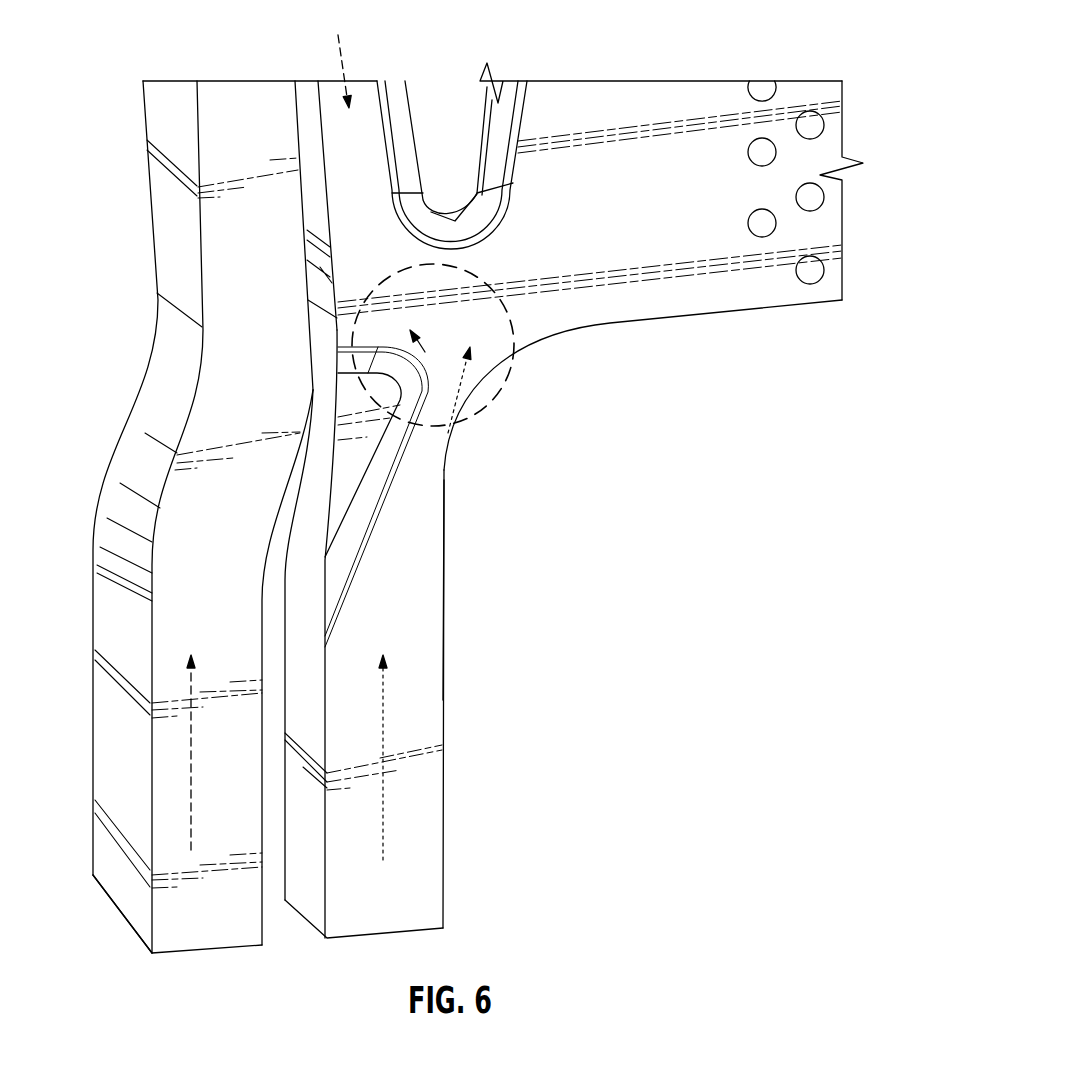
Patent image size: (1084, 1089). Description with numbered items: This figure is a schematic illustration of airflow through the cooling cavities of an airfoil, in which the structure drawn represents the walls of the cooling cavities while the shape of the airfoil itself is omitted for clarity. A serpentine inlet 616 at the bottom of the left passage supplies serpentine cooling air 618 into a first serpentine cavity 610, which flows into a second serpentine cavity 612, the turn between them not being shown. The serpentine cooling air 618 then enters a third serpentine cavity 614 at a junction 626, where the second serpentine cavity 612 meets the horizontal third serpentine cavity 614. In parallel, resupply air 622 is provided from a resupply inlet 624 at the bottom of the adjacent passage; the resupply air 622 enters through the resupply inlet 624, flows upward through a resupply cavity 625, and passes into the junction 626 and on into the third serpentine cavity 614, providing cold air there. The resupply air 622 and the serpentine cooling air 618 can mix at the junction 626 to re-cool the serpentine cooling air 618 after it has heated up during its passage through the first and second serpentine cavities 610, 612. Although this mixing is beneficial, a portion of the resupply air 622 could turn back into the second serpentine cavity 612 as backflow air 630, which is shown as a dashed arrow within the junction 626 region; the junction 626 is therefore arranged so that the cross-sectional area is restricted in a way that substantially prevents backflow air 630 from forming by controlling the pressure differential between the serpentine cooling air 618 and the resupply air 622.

The first serpentine cavity 610 is at (273, 257).
The second serpentine cavity 612 is at (380, 162).
The third serpentine cavity 614 is at (612, 221).
The serpentine inlet 616 is at (123, 892).
The serpentine cooling air 618 is at (345, 62).
The resupply air 622 is at (477, 404).
The resupply inlet 624 is at (425, 890).
The resupply cavity 625 is at (425, 583).
The junction 626 is at (513, 363).
The backflow air 630 is at (423, 347).